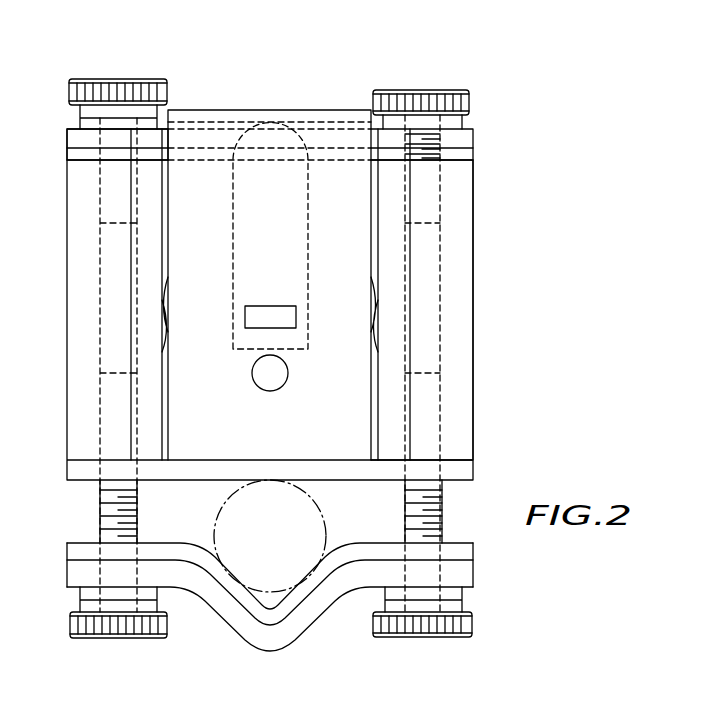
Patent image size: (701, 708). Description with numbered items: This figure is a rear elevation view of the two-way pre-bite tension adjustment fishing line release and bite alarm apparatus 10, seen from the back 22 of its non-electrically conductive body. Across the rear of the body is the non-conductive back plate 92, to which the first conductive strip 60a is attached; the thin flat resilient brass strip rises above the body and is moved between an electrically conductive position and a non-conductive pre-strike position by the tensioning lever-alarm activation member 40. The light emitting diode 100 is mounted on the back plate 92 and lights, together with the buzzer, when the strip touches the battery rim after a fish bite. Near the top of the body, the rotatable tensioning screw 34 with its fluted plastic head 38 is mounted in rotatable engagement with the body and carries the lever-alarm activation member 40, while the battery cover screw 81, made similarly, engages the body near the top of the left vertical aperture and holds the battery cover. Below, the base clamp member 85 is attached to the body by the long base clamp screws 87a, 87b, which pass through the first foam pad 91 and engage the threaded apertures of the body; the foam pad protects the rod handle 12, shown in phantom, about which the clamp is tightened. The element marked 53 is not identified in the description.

The fishing line release and bite alarm apparatus 10 is at (473, 178).
The handle 12 is at (330, 516).
The back 22 is at (378, 412).
The tensioning screw 34 is at (69, 82).
The plastic head 38 is at (147, 79).
The tensioning lever-alarm activation member 40 is at (68, 137).
The collar 53 is at (80, 125).
The first conductive strip 60a is at (308, 240).
The battery cover screw 81 is at (422, 90).
The base clamp member 85 is at (300, 633).
The base clamp screw 87a is at (100, 500).
The base clamp screw 87b is at (442, 503).
The first foam pad 91 is at (468, 548).
The back plate 92 is at (270, 110).
The light emitting diode 100 is at (288, 375).